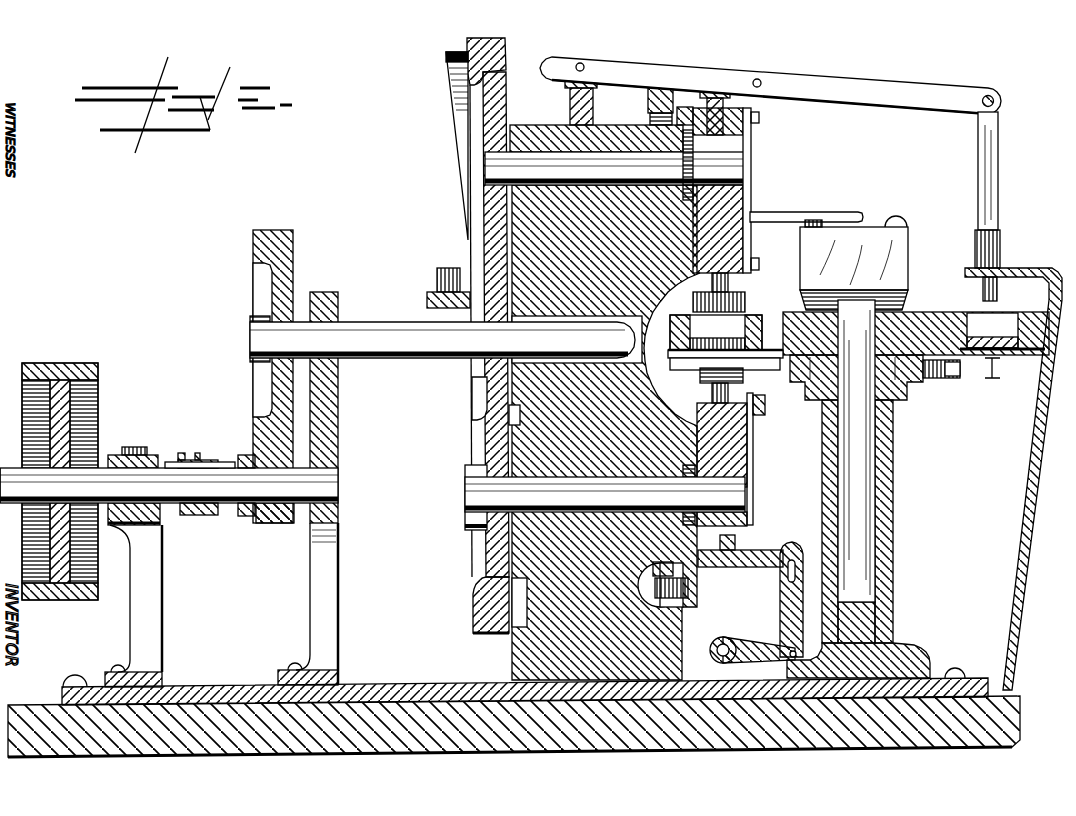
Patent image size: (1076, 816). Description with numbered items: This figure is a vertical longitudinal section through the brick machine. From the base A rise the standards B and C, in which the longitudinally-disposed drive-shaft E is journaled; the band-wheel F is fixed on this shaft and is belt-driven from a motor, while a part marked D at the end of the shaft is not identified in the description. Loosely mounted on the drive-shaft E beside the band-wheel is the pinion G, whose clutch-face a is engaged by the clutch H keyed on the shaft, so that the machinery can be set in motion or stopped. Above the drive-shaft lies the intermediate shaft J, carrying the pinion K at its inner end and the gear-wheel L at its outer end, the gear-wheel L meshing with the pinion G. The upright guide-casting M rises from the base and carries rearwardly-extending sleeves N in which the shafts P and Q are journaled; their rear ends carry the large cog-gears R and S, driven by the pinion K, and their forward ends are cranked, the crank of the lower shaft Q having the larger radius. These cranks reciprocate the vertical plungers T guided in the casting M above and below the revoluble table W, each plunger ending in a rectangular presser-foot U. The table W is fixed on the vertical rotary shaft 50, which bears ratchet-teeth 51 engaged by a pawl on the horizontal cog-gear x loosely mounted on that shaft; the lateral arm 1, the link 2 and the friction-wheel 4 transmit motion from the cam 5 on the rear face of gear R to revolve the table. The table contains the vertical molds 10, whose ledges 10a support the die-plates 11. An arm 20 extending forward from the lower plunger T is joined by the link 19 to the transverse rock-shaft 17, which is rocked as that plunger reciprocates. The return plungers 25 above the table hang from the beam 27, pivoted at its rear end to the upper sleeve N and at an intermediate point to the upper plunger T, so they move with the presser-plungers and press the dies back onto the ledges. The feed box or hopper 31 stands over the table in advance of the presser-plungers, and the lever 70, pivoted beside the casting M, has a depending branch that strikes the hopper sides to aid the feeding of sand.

The base A is at (572, 758).
The standard B is at (140, 606).
The standard C is at (318, 488).
The driving shaft D is at (3, 504).
The drive-shaft E is at (97, 490).
The band-wheel F is at (60, 465).
The pinion G is at (275, 533).
The clutch H is at (170, 531).
The intermediate shaft J is at (382, 326).
The pinion K is at (478, 367).
The gear-wheel L is at (258, 376).
The upright guide-casting M is at (666, 233).
The rearwardly-extending sleeves N is at (627, 130).
The shaft P is at (750, 176).
The shaft Q is at (478, 503).
The cog-gear R is at (502, 33).
The cog-gear S is at (480, 612).
The vertical reciprocatory plungers T is at (733, 286).
The presser-feet U is at (693, 303).
The revoluble table W is at (992, 479).
The clutch-face a is at (244, 495).
The horizontal cog-gear x is at (760, 388).
The lateral arm 1 is at (427, 300).
The link 2 is at (668, 352).
The friction-wheel 4 is at (437, 281).
The cam 5 is at (466, 150).
The molds 10 is at (857, 331).
The ledges 10a is at (700, 374).
The die-plates 11 is at (978, 352).
The transverse rock-shaft 17 is at (725, 644).
The link 19 is at (786, 607).
The arm 20 is at (772, 553).
The vertically-reciprocating plungers 25 is at (1001, 206).
The beam 27 is at (770, 84).
The feed box or hopper 31 is at (854, 263).
The vertical rotary shaft 50 is at (858, 467).
The ratchet-teeth 51 is at (905, 378).
The lever 70 is at (836, 212).